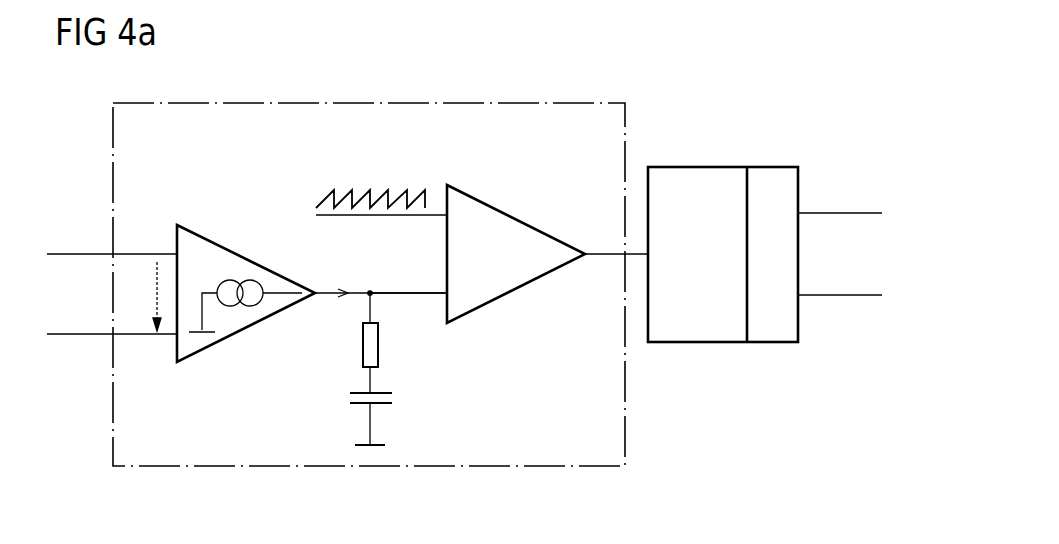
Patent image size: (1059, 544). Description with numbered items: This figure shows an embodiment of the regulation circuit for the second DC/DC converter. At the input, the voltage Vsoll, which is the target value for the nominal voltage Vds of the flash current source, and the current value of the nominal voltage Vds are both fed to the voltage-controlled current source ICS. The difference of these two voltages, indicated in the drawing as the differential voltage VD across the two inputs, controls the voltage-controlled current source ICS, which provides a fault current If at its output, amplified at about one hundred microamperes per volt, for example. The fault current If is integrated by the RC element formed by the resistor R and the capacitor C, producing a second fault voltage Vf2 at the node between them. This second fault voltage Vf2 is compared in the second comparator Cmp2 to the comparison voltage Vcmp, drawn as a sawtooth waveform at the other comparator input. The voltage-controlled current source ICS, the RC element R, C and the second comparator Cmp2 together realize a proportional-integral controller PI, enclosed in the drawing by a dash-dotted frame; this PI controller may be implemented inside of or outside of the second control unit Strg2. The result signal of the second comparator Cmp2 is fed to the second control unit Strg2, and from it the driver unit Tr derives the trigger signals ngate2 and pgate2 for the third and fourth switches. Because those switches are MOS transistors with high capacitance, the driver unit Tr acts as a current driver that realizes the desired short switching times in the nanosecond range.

The PI controller PI is at (347, 101).
The voltage VSoll Vsoll is at (85, 252).
The nominal voltage Vds is at (88, 332).
The differential voltage VD is at (143, 296).
The voltage-controlled current source ICS is at (232, 251).
The fault current If is at (346, 290).
The second fault voltage Vf2 is at (400, 290).
The resistor R is at (381, 350).
The capacitor C is at (395, 402).
The comparison voltage Vcmp is at (404, 188).
The second comparator Cmp2 is at (545, 192).
The second control unit Strg2 is at (698, 166).
The driver unit Tr is at (773, 166).
The trigger signal ngate2 is at (840, 202).
The trigger signal pgate2 is at (840, 282).